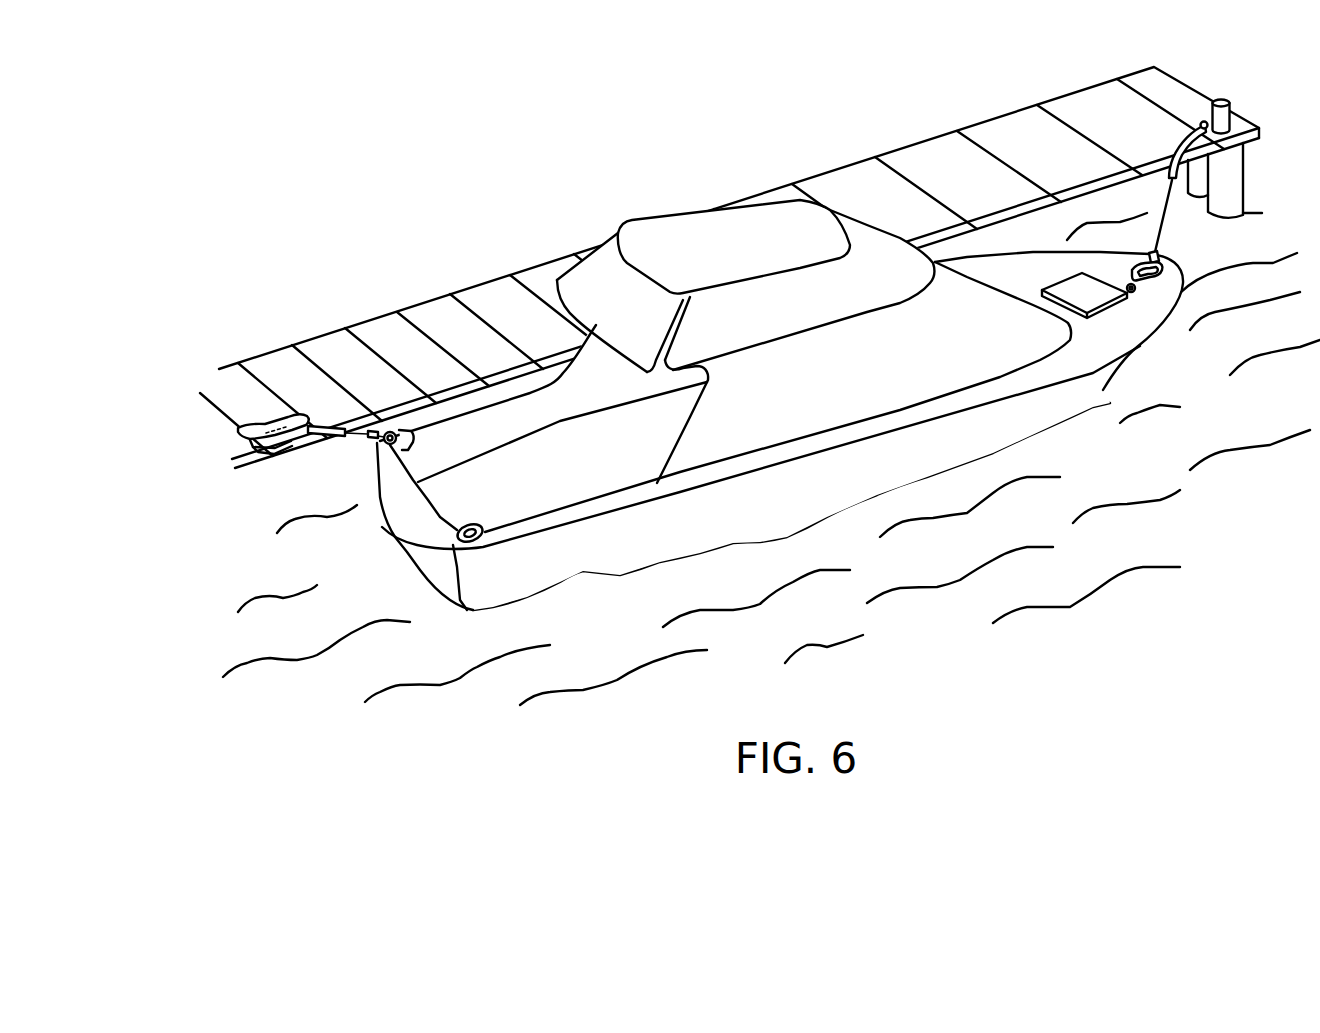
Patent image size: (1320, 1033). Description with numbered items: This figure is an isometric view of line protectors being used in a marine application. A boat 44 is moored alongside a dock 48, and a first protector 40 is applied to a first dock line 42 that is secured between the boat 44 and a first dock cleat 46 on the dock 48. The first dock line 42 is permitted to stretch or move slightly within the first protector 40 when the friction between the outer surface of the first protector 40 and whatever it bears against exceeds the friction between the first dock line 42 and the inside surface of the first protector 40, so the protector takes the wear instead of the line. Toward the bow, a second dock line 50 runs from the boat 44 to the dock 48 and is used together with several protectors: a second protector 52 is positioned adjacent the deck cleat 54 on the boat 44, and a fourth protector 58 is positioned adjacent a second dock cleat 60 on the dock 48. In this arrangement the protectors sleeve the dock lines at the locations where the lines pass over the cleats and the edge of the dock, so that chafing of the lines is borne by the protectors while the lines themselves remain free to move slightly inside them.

The first protector 40 is at (1178, 137).
The first dock line 42 is at (1163, 214).
The boat 44 is at (1102, 341).
The first dock cleat 46 is at (1224, 98).
The dock 48 is at (904, 157).
The second dock line 50 is at (362, 423).
The second protector 52 is at (372, 440).
The deck cleat 54 is at (323, 437).
The fourth protector 58 is at (269, 451).
The second dock cleat 60 is at (237, 433).